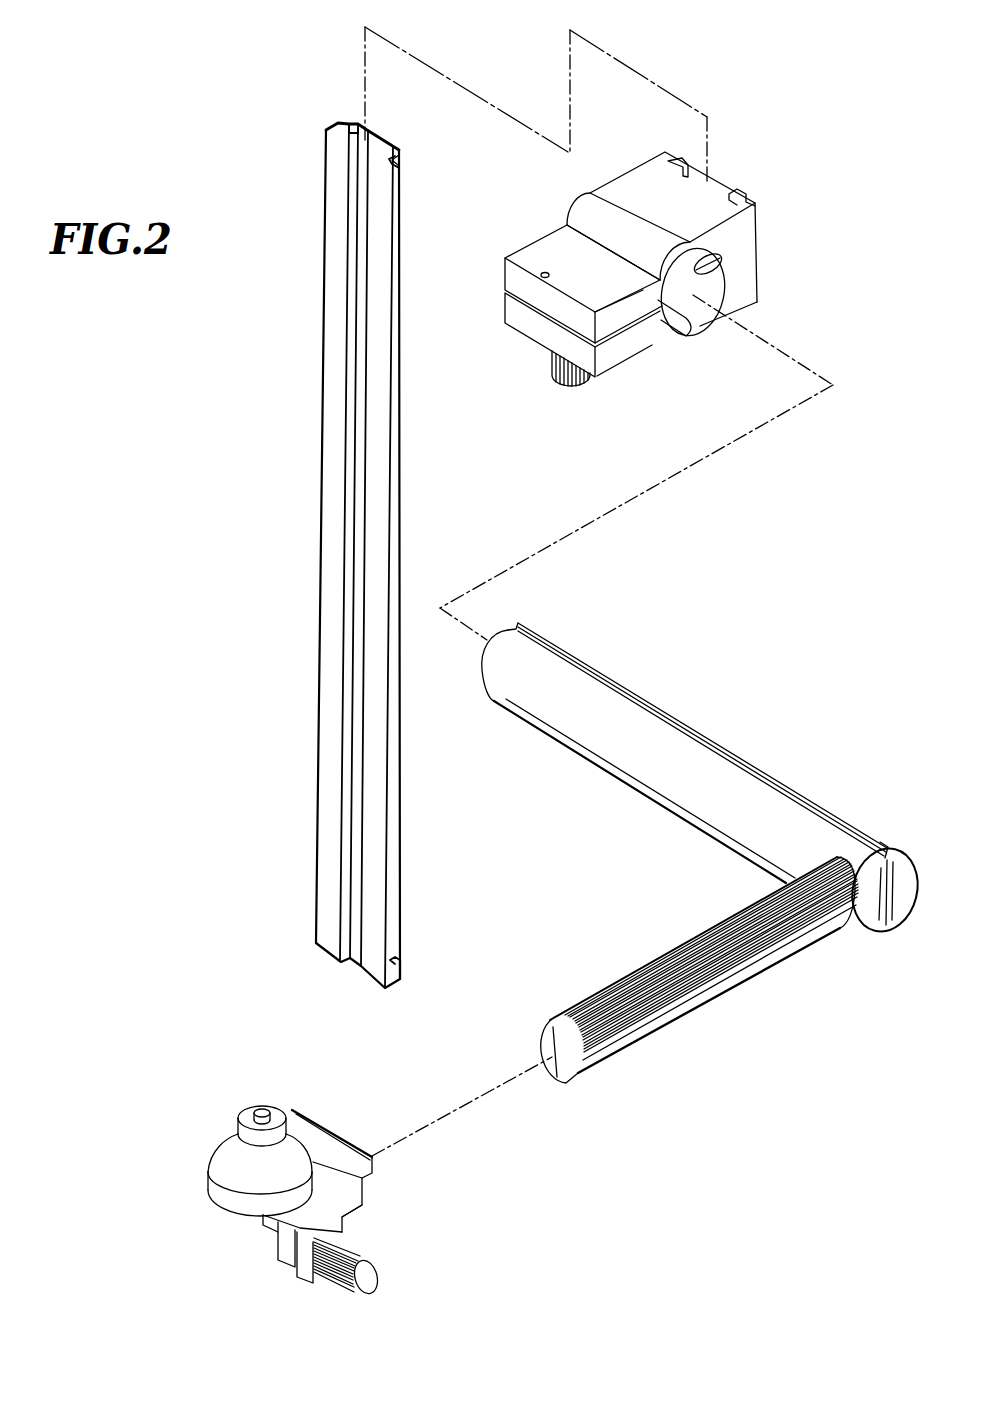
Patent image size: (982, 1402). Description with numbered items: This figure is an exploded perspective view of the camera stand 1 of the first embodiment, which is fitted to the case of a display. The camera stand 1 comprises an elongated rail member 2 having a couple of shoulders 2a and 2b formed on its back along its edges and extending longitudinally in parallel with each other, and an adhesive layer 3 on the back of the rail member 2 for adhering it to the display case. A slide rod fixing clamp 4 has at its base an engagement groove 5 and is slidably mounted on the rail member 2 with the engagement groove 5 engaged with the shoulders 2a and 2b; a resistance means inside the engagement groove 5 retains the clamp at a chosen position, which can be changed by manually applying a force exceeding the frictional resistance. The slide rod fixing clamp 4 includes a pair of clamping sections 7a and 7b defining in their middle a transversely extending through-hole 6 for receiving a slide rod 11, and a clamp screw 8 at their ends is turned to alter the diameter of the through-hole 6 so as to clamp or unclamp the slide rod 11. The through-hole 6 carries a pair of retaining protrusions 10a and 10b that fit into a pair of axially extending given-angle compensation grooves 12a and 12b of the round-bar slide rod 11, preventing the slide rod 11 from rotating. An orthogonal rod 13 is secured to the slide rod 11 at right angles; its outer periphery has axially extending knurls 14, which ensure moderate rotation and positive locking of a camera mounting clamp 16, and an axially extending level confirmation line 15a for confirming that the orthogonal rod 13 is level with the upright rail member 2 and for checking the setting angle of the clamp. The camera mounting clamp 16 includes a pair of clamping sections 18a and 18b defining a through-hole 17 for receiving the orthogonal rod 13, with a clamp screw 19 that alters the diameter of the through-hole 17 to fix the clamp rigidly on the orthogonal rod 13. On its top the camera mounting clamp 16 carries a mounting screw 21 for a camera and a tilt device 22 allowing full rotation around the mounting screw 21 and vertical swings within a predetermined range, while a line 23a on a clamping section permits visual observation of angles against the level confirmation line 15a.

The camera stand 1 is at (228, 175).
The rail member 2 is at (330, 300).
The shoulder 2a is at (347, 127).
The shoulder 2b is at (400, 160).
The adhesive layer 3 is at (383, 148).
The slide rod fixing clamp 4 is at (640, 190).
The engagement groove 5 is at (713, 190).
The through-hole 6 is at (718, 291).
The clamping section 7a is at (545, 250).
The clamping section 7b is at (533, 330).
The clamp screw 8 is at (575, 384).
The retaining protrusion 10a is at (714, 265).
The retaining protrusion 10b is at (697, 332).
The slide rod 11 is at (612, 757).
The given-angle compensation groove 12a is at (752, 767).
The given-angle compensation groove 12b is at (885, 934).
The orthogonal rod 13 is at (690, 965).
The knurls 14 is at (620, 1018).
The level confirmation line 15a is at (697, 995).
The camera mounting clamp 16 is at (358, 1190).
The through-hole 17 is at (278, 1226).
The clamping section 18a is at (310, 1270).
The clamping section 18b is at (278, 1252).
The clamp screw 19 is at (372, 1274).
The mounting screw 21 is at (262, 1108).
The tilt device 22 is at (235, 1155).
The line 23a is at (358, 1217).